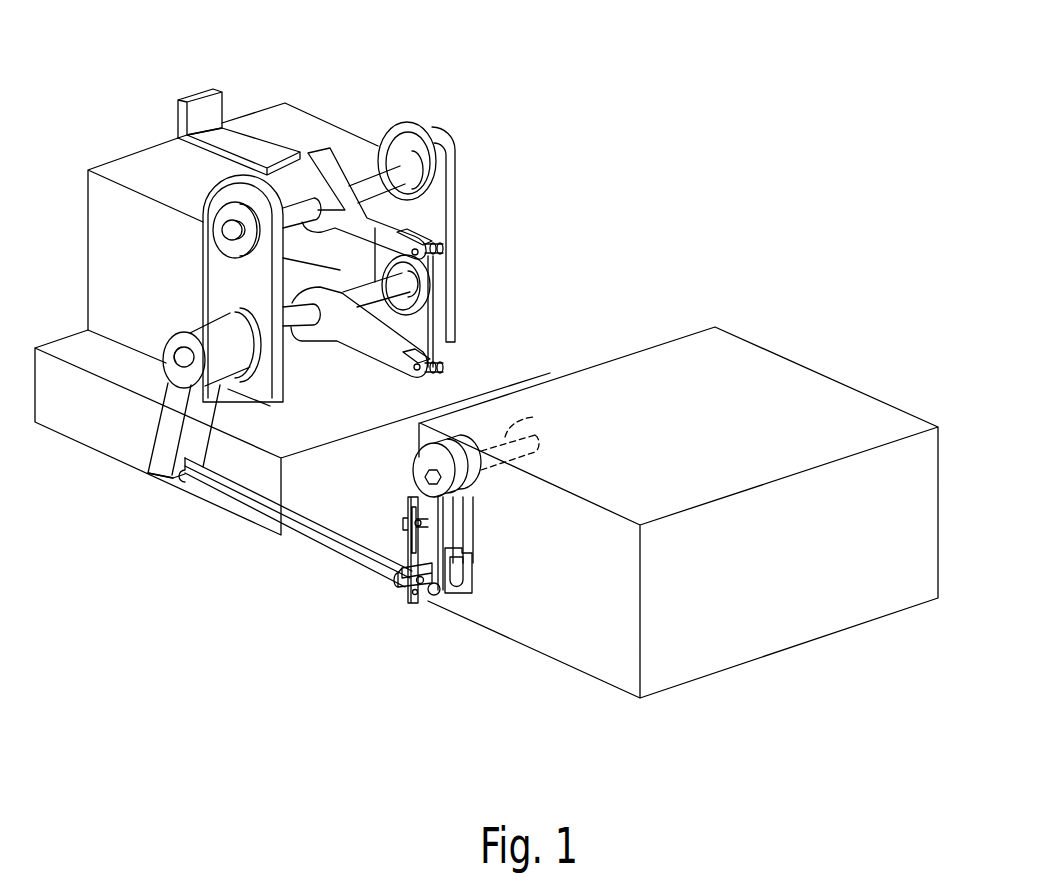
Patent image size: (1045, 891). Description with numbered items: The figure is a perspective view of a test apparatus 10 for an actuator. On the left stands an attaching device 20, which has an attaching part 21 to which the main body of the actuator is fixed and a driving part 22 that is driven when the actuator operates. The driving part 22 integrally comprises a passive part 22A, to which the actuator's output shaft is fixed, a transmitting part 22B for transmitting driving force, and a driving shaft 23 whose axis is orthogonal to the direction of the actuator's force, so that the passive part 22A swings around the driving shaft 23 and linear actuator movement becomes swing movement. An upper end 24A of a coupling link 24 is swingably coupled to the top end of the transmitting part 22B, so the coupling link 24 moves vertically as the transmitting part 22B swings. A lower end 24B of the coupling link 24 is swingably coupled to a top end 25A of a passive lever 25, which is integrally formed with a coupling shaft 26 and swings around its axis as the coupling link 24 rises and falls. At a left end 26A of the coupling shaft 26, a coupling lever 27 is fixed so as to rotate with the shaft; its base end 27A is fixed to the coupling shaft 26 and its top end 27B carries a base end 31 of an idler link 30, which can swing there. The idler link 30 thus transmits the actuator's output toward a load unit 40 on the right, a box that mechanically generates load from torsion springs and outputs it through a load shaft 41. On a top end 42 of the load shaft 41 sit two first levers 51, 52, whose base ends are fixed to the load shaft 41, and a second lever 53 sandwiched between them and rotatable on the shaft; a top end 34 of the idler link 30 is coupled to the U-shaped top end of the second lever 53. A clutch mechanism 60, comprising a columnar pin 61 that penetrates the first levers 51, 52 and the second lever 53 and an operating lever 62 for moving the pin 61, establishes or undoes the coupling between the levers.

The test apparatus 10 is at (681, 173).
The attaching device 20 is at (301, 86).
The attaching part 21 is at (225, 94).
The driving part 22 is at (473, 73).
The passive part 22A is at (340, 148).
The transmitting part 22B is at (420, 175).
The driving shaft 23 is at (283, 198).
The coupling link 24 is at (452, 300).
The upper end of coupling link 24A is at (443, 248).
The lower end of coupling link 24B is at (449, 373).
The passive lever 25 is at (357, 343).
The top end of passive lever 25A is at (440, 378).
The coupling shaft 26 is at (290, 338).
The left end of coupling shaft 26A is at (170, 338).
The coupling lever 27 is at (150, 445).
The base end of coupling lever 27A is at (196, 330).
The top end of coupling lever 27B is at (160, 478).
The idler link 30 is at (310, 535).
The base end of idler link 31 is at (182, 483).
The top end of idler link 34 is at (404, 578).
The load unit 40 is at (830, 377).
The load shaft 41 is at (512, 421).
The top end of load shaft 42 is at (413, 469).
The first lever 51 is at (475, 538).
The first lever 52 is at (475, 513).
The second lever 53 is at (473, 576).
The clutch mechanism 60 is at (356, 624).
The pin 61 is at (410, 526).
The operating lever 62 is at (415, 603).